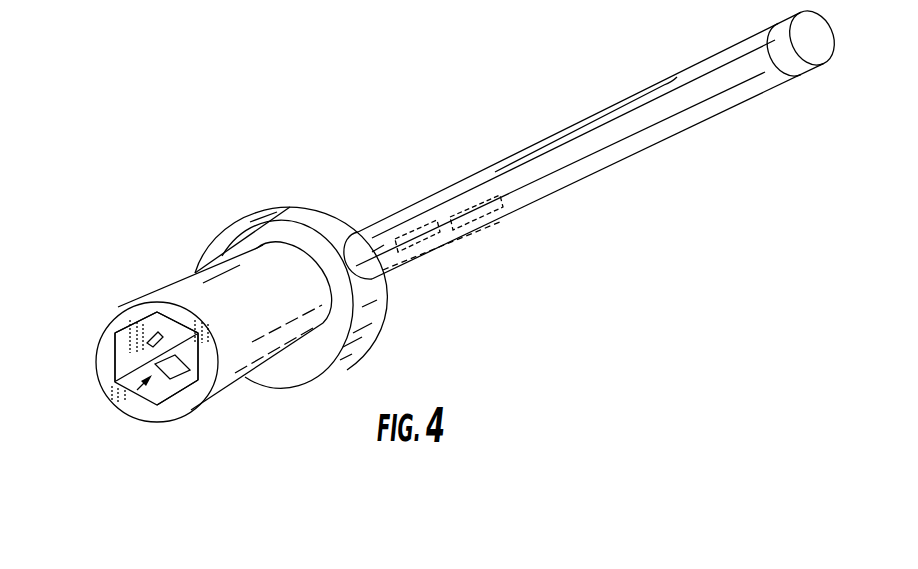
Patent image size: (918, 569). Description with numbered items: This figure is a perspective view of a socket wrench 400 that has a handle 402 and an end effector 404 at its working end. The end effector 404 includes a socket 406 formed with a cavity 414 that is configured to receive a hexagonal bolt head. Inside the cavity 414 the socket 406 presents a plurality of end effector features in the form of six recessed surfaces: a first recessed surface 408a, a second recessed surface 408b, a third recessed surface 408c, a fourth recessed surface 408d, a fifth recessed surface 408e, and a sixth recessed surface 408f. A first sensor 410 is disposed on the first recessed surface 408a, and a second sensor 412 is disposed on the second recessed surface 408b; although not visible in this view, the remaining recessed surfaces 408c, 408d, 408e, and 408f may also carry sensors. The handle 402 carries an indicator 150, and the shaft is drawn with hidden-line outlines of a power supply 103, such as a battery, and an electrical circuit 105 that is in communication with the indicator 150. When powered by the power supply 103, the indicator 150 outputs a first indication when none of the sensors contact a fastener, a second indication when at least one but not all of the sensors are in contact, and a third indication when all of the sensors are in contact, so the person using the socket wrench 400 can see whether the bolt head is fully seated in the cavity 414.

The socket wrench 400 is at (304, 126).
The handle 402 is at (622, 148).
The end effector 404 is at (227, 190).
The socket 406 is at (210, 386).
The first recessed surface 408a is at (140, 417).
The second recessed surface 408b is at (114, 357).
The third recessed surface 408c is at (134, 324).
The fourth recessed surface 408d is at (178, 322).
The fifth recessed surface 408e is at (208, 378).
The sixth recessed surface 408f is at (163, 390).
The first sensor 410 is at (154, 405).
The second sensor 412 is at (116, 373).
The cavity 414 is at (131, 413).
The power supply 103 is at (473, 200).
The electrical circuit 105 is at (420, 231).
The indicator 150 is at (798, 67).